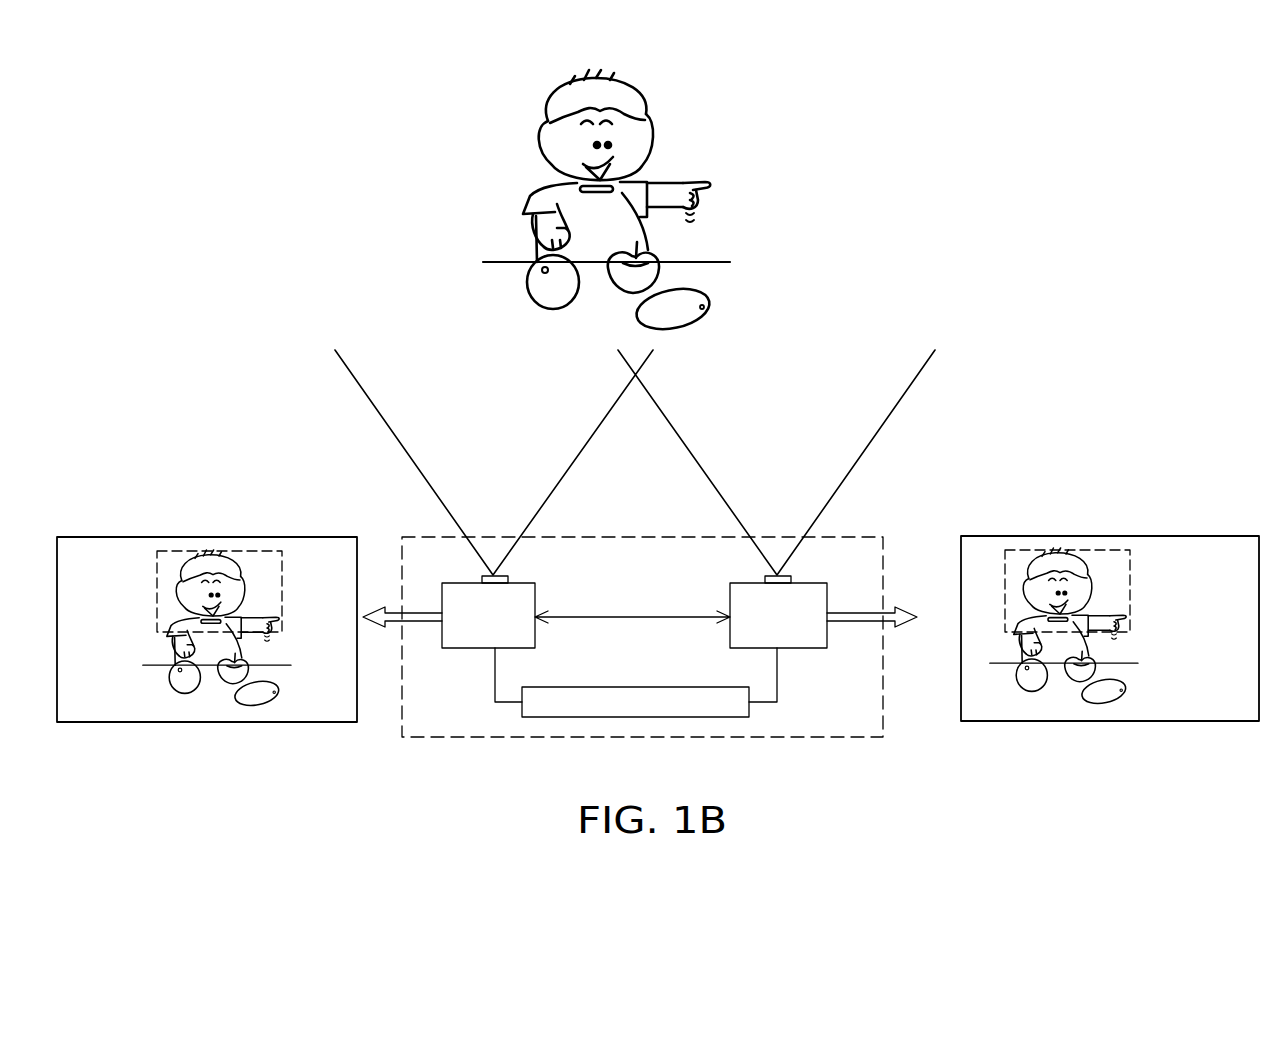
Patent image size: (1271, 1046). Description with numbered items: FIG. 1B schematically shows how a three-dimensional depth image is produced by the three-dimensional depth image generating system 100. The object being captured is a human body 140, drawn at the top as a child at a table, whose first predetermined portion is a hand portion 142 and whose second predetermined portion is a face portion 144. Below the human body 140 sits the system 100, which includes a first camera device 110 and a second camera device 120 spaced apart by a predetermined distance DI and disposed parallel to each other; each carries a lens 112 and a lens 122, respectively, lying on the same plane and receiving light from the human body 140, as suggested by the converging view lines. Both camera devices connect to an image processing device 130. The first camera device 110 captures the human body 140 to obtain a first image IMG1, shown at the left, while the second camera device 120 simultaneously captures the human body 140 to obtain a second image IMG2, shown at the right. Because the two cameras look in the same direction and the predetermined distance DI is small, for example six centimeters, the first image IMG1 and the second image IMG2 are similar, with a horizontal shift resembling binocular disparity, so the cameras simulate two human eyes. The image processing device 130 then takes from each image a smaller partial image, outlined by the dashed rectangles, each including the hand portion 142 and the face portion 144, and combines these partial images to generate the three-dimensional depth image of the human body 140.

The 3-dimensional depth image generating system 100 is at (884, 710).
The first camera device 110 is at (462, 649).
The lens 112 is at (510, 580).
The second camera device 120 is at (800, 649).
The lens 122 is at (793, 580).
The image processing device 130 is at (590, 687).
The human body 140 is at (541, 124).
The hand portion 142 is at (708, 187).
The face portion 144 is at (650, 122).
The predetermined distance DI is at (632, 604).
The first image IMG1 is at (173, 537).
The second image IMG2 is at (1123, 536).